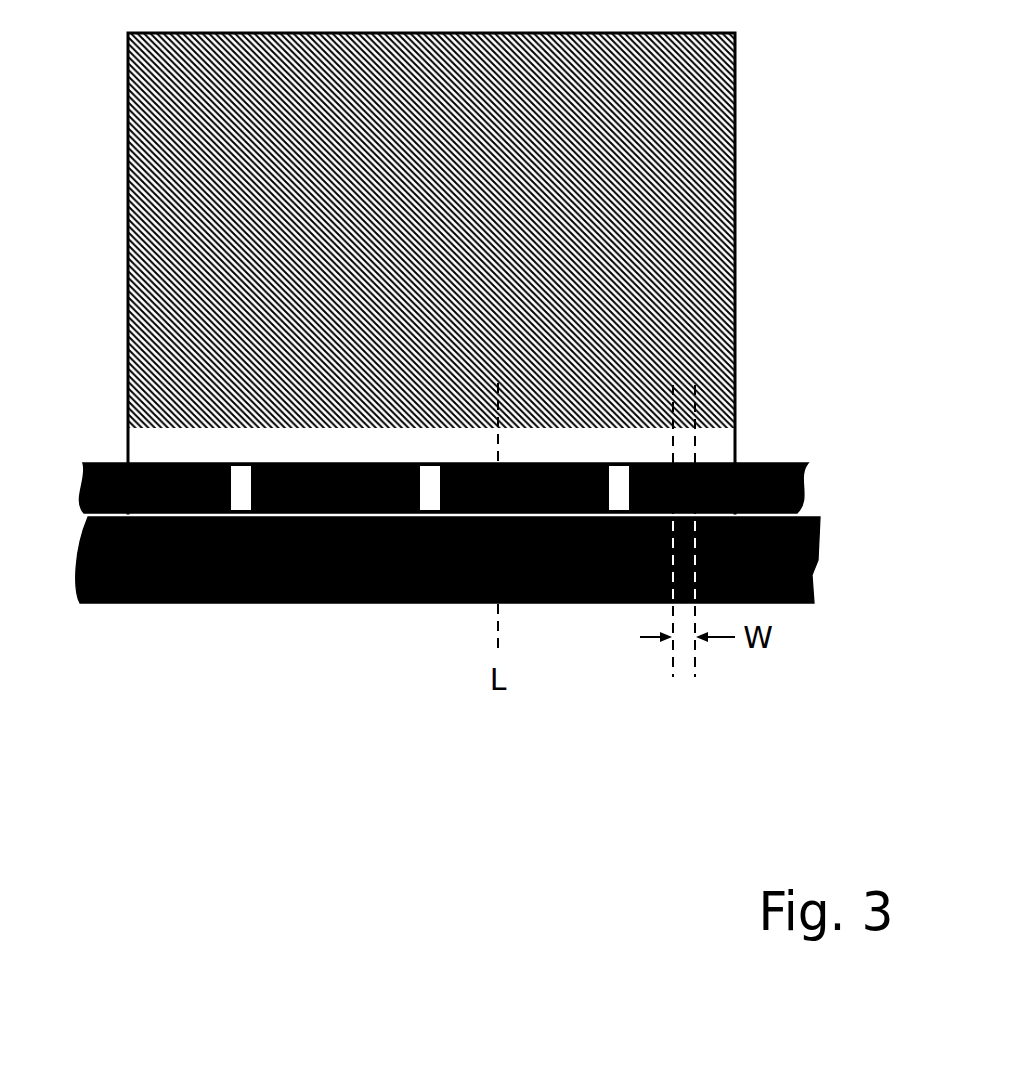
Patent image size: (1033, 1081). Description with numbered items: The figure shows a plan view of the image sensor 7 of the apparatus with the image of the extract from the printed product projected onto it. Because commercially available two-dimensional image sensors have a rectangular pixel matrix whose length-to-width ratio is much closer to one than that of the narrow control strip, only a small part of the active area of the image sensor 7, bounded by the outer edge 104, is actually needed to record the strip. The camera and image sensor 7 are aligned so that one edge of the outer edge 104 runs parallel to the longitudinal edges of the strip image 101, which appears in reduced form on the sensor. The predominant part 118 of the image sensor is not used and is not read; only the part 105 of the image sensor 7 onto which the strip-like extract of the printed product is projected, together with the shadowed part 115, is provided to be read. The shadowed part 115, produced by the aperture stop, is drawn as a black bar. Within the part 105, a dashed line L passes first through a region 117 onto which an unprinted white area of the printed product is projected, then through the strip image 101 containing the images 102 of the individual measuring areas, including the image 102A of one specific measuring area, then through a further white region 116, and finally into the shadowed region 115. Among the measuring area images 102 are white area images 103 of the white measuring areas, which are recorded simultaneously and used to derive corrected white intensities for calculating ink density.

The image sensor 7 is at (801, 222).
The image of the control strip 101 is at (801, 441).
The measuring area image 102 is at (590, 465).
The image of measuring area 2A 102A is at (488, 465).
The white area images 103 is at (405, 465).
The outer edge of the active area 104 is at (735, 288).
The part of the image sensor onto which the strip-like extract is projected 105 is at (502, 432).
The shadowed region 115 is at (812, 575).
The further region 116 is at (88, 517).
The region 117 is at (160, 448).
The predominant part of the image sensor 118 is at (630, 163).